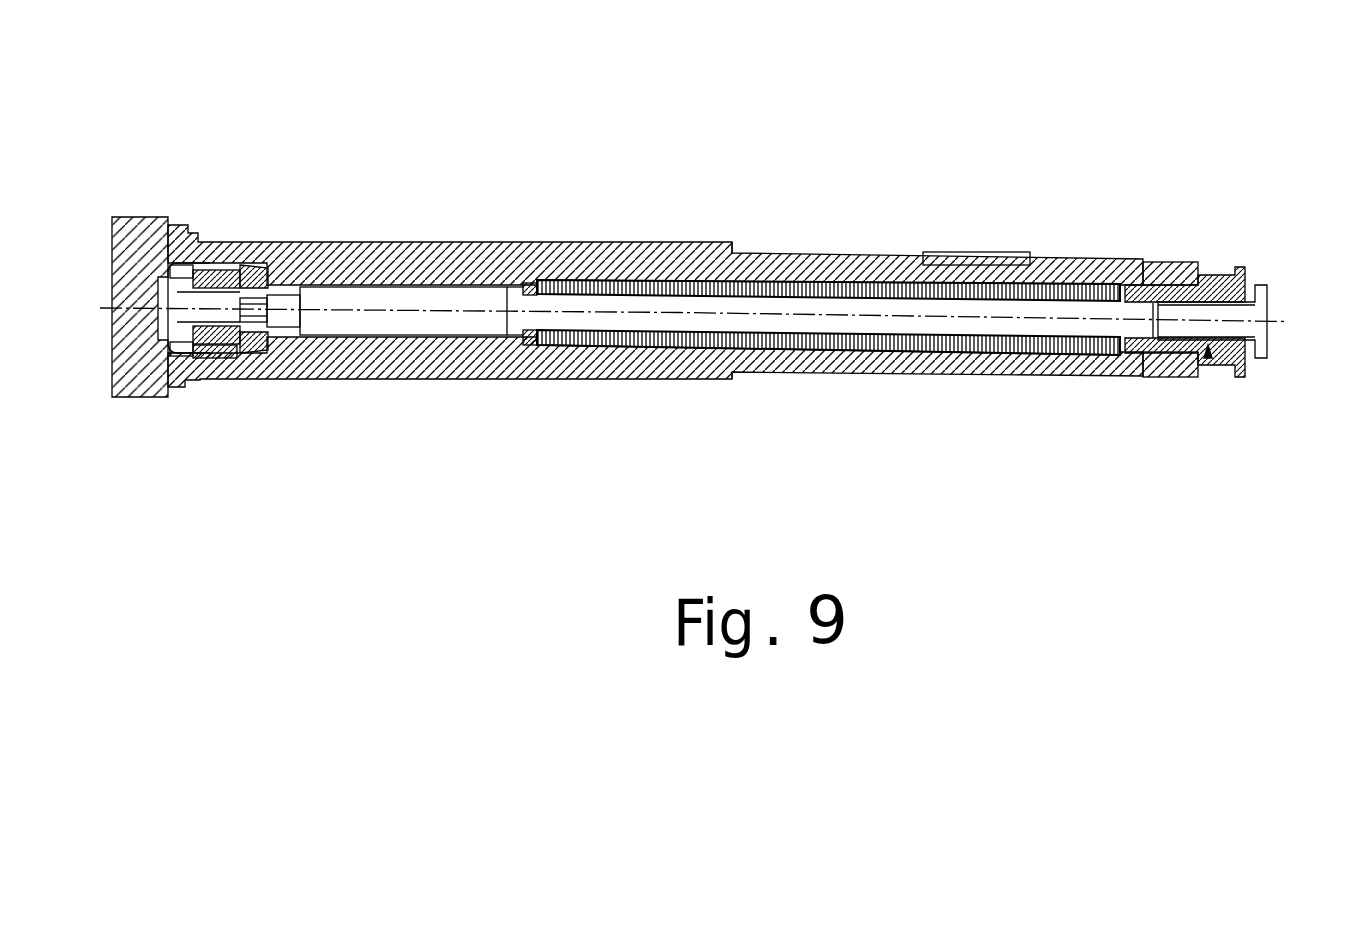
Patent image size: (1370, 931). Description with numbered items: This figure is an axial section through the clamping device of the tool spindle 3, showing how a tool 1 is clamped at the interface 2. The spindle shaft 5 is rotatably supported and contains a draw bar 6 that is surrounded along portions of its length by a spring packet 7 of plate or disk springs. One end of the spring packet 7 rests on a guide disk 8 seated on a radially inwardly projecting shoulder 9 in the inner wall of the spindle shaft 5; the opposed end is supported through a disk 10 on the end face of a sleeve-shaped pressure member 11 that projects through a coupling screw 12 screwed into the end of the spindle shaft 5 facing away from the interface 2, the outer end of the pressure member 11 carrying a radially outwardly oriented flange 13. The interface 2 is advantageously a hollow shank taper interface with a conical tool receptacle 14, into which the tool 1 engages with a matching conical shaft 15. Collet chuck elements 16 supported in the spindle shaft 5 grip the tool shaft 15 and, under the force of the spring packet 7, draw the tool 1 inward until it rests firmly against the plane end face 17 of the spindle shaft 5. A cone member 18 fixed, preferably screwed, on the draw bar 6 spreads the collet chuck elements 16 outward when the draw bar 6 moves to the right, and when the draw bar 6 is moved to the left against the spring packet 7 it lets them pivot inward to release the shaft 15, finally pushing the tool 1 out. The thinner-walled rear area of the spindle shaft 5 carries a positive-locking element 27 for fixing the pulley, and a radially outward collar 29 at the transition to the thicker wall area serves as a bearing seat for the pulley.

The tool 1 is at (133, 253).
The interface 2 is at (232, 262).
The tool spindle 3 is at (929, 150).
The spindle shaft 5 is at (605, 268).
The draw bar 6 is at (447, 300).
The spring packet 7 is at (758, 293).
The guide disk 8 is at (530, 338).
The shoulder 9 is at (522, 284).
The disk 10 is at (1148, 262).
The pressure member 11 is at (1208, 356).
The coupling screw 12 is at (1213, 286).
The flange 13 is at (1268, 290).
The tool receptacle 14 is at (213, 362).
The conical shaft 15 is at (190, 342).
The collet chuck elements 16 is at (238, 272).
The plane end face 17 is at (197, 245).
The cone member 18 is at (206, 283).
The positive-locking element 27 is at (1003, 262).
The collar 29 is at (737, 247).